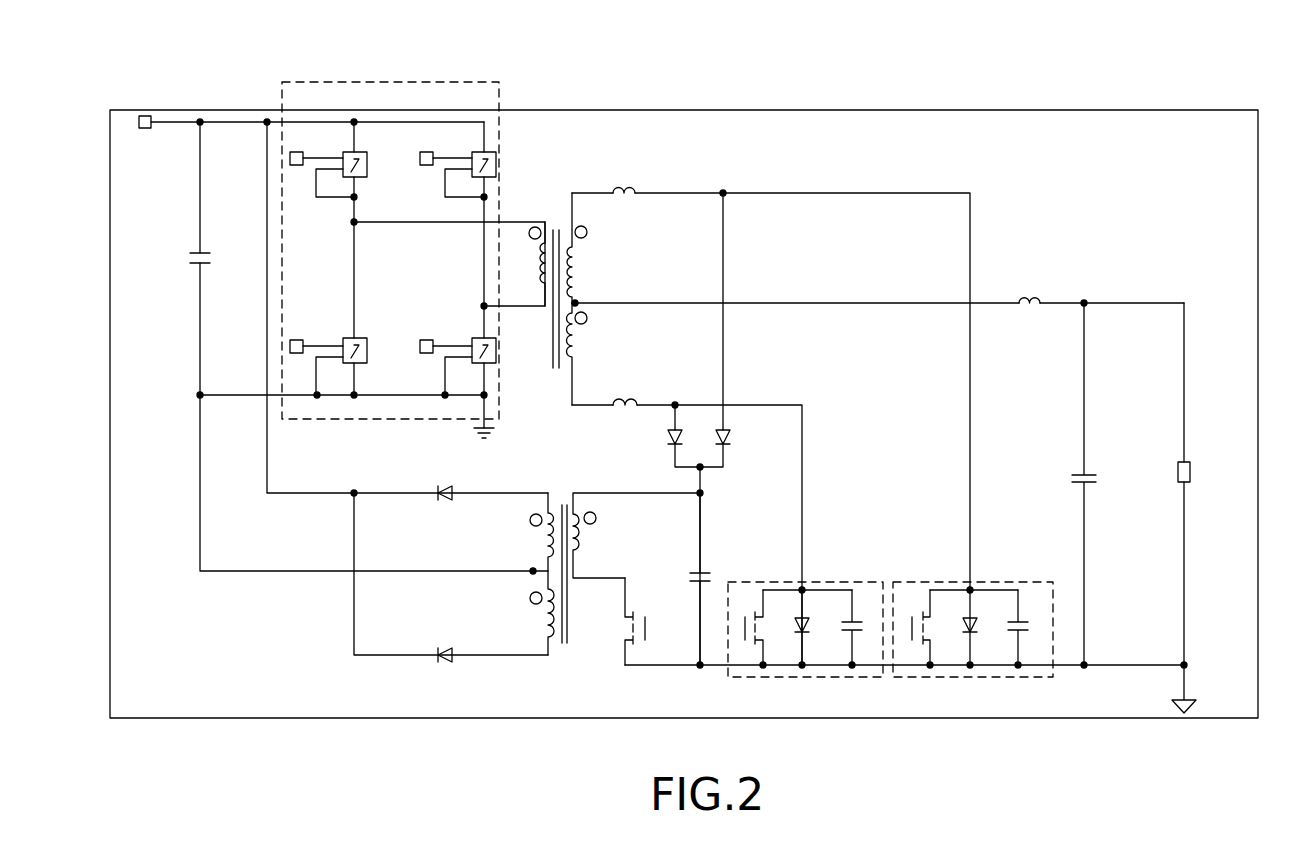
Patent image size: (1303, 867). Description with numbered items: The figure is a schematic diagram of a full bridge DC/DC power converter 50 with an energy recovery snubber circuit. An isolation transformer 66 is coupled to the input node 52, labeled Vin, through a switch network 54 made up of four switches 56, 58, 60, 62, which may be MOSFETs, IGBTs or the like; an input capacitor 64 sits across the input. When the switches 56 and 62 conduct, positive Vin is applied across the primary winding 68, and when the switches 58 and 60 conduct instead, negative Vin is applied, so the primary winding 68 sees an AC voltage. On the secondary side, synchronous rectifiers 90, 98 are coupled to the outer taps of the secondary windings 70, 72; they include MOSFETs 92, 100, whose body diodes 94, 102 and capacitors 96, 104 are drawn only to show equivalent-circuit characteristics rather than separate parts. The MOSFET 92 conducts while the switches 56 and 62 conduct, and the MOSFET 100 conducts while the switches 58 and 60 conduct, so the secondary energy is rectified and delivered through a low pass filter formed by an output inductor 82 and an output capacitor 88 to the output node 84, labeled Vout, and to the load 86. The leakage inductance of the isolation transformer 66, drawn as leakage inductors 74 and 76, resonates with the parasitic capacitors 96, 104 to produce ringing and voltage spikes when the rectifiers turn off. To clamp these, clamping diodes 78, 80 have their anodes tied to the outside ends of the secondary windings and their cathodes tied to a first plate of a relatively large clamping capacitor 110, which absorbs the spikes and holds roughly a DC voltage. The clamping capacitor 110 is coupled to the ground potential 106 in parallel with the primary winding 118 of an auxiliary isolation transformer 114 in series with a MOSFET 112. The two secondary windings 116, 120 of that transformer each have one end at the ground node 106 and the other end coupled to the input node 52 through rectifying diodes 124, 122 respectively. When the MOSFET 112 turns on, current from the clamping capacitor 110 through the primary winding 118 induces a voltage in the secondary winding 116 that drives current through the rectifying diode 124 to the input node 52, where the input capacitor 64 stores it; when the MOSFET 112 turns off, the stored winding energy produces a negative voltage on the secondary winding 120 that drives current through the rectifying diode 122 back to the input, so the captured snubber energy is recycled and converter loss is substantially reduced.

The power converter 50 is at (1087, 72).
The input node 52 is at (125, 118).
The switch network 54 is at (397, 82).
The switch 56 is at (334, 128).
The switch 58 is at (452, 136).
The switch 60 is at (302, 365).
The switch 62 is at (475, 333).
The input capacitor 64 is at (195, 272).
The isolation transformer 66 is at (573, 296).
The primary winding 68 is at (540, 247).
The secondary winding 70 is at (578, 252).
The secondary winding 72 is at (580, 324).
The leakage inductor 74 is at (638, 190).
The leakage inductor 76 is at (630, 410).
The clamping diode 78 is at (668, 446).
The clamping diode 80 is at (735, 441).
The output inductor 82 is at (1027, 294).
The output node 84 is at (1202, 309).
The load 86 is at (1190, 462).
The output capacitor 88 is at (1090, 485).
The synchronous rectifier 90 is at (822, 678).
The MOSFET 92 is at (762, 666).
The body diode 94 is at (805, 618).
The capacitor 96 is at (855, 620).
The synchronous rectifier 98 is at (953, 678).
The MOSFET 100 is at (930, 664).
The body diode 102 is at (975, 620).
The capacitor 104 is at (1022, 620).
The ground potential 106 is at (495, 432).
The clamping capacitor 110 is at (697, 586).
The MOSFET 112 is at (622, 650).
The isolation transformer 114 is at (538, 494).
The secondary winding 116 is at (540, 549).
The primary winding 118 is at (583, 539).
The secondary winding 120 is at (540, 627).
The rectifying diode 122 is at (437, 661).
The rectifying diode 124 is at (440, 499).